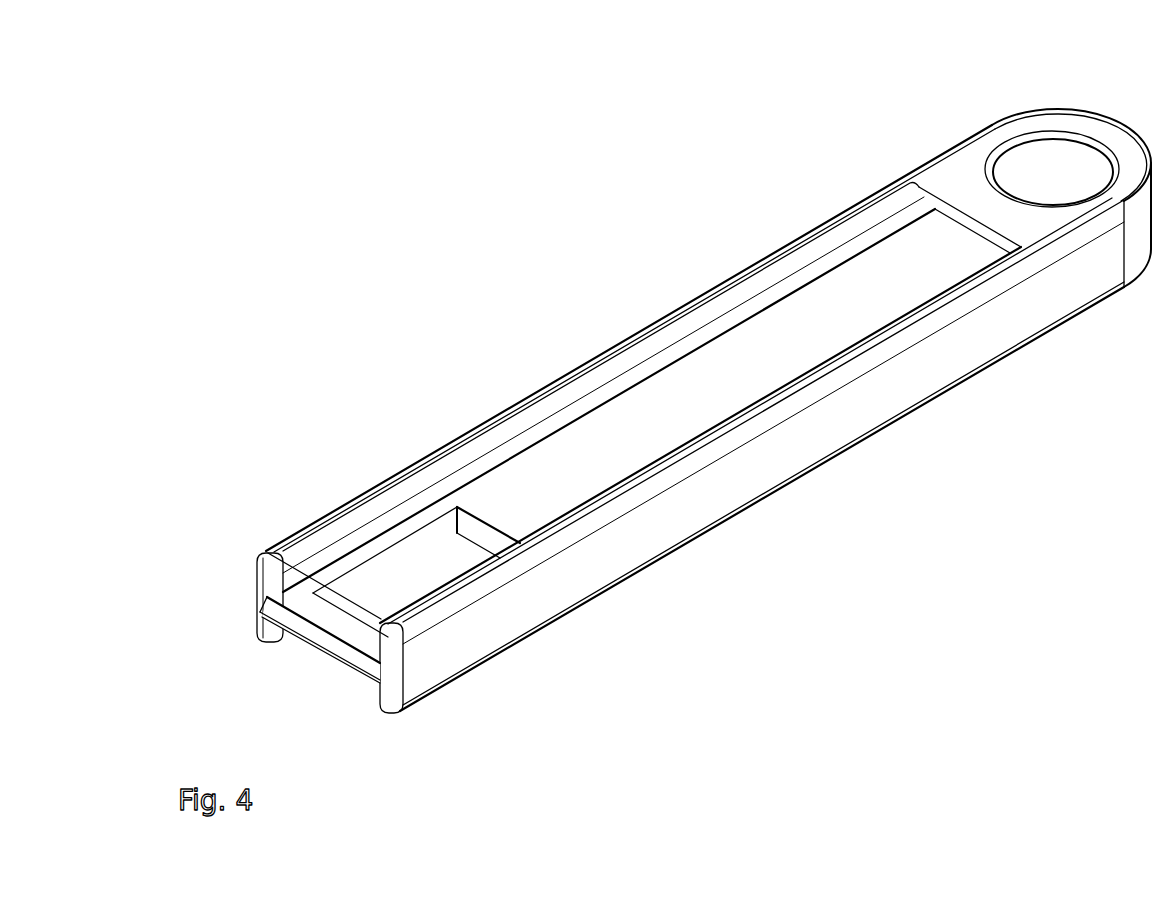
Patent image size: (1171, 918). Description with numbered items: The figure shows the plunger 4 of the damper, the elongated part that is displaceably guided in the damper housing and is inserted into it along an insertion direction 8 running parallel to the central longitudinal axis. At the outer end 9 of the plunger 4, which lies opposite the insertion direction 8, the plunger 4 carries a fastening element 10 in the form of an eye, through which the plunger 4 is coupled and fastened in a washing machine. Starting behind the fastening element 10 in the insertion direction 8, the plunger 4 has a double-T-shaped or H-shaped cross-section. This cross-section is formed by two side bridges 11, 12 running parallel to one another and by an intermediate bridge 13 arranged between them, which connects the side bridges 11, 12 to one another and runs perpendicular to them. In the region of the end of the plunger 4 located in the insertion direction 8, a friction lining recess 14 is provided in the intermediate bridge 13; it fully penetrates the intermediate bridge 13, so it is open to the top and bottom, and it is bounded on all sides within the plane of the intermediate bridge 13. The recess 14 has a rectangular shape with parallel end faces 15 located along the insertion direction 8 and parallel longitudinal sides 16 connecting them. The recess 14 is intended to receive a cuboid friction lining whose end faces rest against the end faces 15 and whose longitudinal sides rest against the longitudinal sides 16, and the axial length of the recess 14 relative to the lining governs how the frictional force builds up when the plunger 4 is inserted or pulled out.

The plunger 4 is at (740, 262).
The insertion direction 8 is at (824, 500).
The outer end 9 is at (937, 153).
The fastening element 10 is at (1026, 158).
The side bridge 11 is at (667, 323).
The side bridge 12 is at (664, 478).
The intermediate bridge 13 is at (645, 405).
The friction lining recess 14 is at (427, 523).
The end faces 15 is at (470, 523).
The longitudinal sides 16 is at (477, 547).